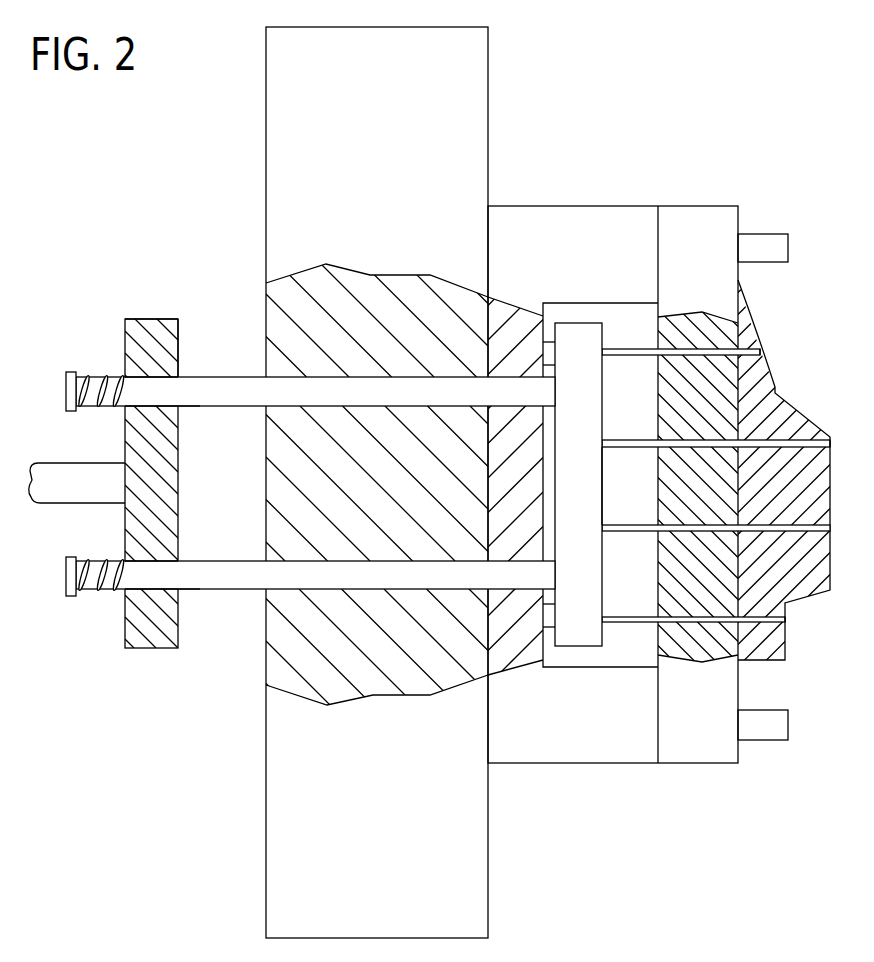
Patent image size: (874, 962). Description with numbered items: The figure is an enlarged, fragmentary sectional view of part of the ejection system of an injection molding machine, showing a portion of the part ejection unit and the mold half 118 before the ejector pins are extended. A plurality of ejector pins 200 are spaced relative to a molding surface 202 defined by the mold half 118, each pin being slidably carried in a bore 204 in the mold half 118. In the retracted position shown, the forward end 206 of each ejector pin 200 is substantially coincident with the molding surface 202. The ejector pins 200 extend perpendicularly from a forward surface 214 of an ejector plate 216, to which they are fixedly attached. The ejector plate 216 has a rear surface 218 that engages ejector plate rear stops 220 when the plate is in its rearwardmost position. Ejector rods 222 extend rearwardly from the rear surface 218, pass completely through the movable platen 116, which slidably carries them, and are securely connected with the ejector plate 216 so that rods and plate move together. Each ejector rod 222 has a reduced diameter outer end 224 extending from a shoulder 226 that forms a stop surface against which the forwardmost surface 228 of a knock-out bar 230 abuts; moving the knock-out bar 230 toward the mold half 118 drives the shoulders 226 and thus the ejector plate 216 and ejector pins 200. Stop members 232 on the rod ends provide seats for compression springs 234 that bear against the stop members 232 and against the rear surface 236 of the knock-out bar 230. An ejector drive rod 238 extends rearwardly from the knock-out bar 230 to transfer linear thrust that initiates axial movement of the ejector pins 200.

The movable platen 116 is at (348, 86).
The mold half 118 is at (693, 217).
The ejector pins 200 is at (617, 356).
The molding surface 202 is at (773, 384).
The bore 204 is at (748, 326).
The forward end 206 is at (758, 351).
The forward surface 214 is at (605, 510).
The ejector plate 216 is at (573, 330).
The rear surface 218 is at (558, 645).
The ejector plate rear stops 220 is at (547, 353).
The ejector rods 222 is at (200, 387).
The reduced diameter outer end 224 is at (147, 388).
The shoulder 226 is at (180, 408).
The forwardmost surface 228 is at (180, 342).
The knock-out bar 230 is at (141, 328).
The stop members 232 is at (67, 389).
The compression springs 234 is at (125, 380).
The rear surface 236 is at (125, 628).
The ejector drive rod 238 is at (63, 494).